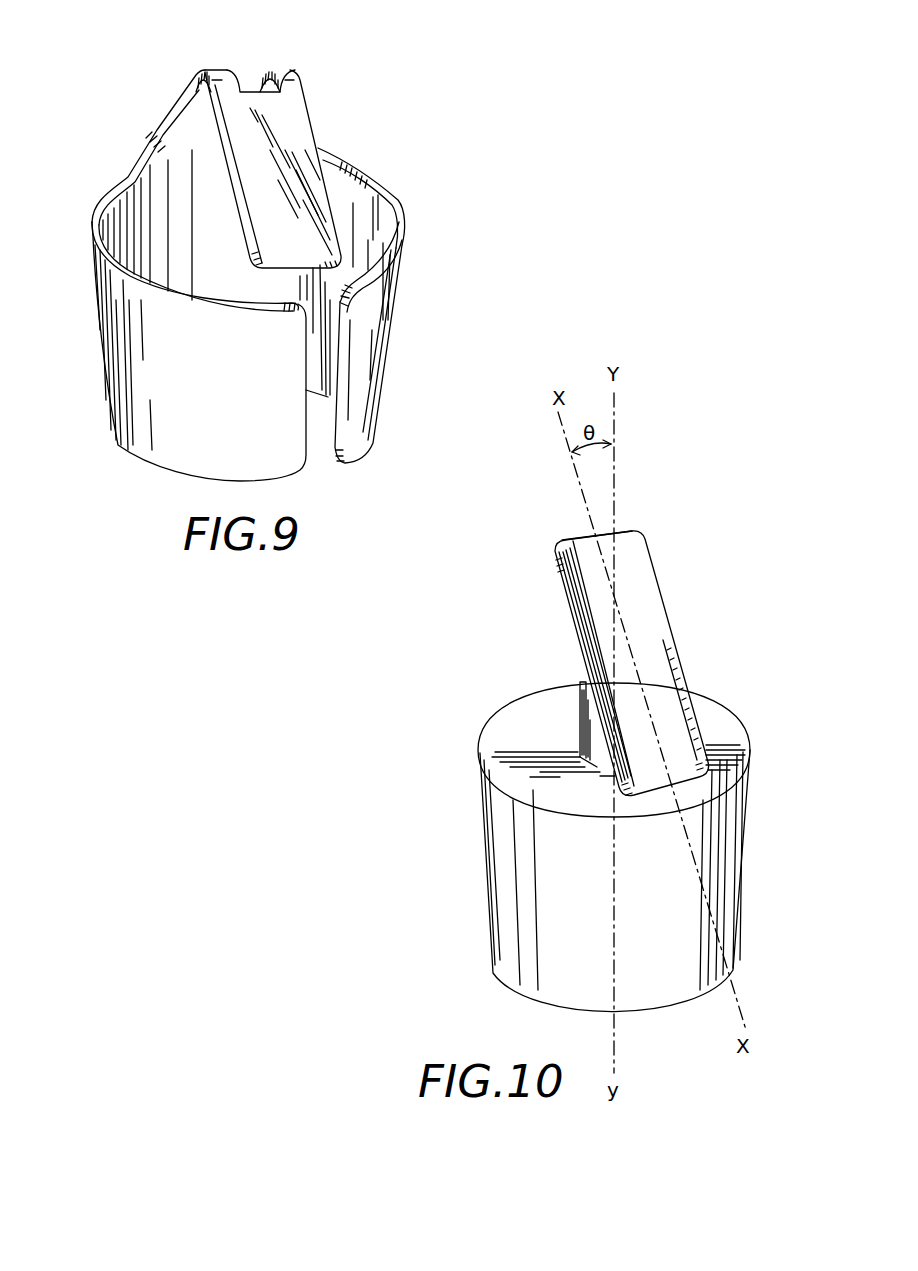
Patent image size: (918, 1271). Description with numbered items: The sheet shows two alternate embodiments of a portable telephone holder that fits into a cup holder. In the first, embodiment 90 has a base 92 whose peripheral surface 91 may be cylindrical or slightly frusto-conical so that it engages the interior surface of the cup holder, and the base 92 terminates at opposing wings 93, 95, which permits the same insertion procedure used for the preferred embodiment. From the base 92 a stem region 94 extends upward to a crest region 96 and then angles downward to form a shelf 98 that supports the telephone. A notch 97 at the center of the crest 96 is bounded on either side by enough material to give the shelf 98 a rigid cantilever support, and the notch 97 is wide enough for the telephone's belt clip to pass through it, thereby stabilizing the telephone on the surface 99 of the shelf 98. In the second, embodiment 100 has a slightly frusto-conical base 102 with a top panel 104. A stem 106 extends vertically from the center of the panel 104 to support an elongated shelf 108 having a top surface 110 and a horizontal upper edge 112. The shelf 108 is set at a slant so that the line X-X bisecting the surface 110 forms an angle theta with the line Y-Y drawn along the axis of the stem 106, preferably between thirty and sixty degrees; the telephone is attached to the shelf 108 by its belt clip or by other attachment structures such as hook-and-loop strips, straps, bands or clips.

In FIG. 9, the portable telephone holder embodiment 90 is at (395, 185).
In FIG. 9, the peripheral surface 91 is at (165, 378).
In FIG. 9, the base 92 is at (397, 330).
In FIG. 9, the wing 93 is at (283, 298).
In FIG. 9, the stem region 94 is at (185, 112).
In FIG. 9, the wing 95 is at (362, 268).
In FIG. 9, the crest region 96 is at (208, 72).
In FIG. 9, the notch 97 is at (247, 88).
In FIG. 9, the shelf 98 is at (322, 162).
In FIG. 9, the surface 99 is at (292, 138).
In FIG. 10, the portable telephone holder embodiment 100 is at (480, 833).
In FIG. 10, the base 102 is at (487, 910).
In FIG. 10, the panel 104 is at (712, 730).
In FIG. 10, the stem 106 is at (578, 720).
In FIG. 10, the elongated shelf 108 is at (678, 635).
In FIG. 10, the top surface 110 is at (643, 606).
In FIG. 10, the horizontal upper edge 112 is at (598, 527).